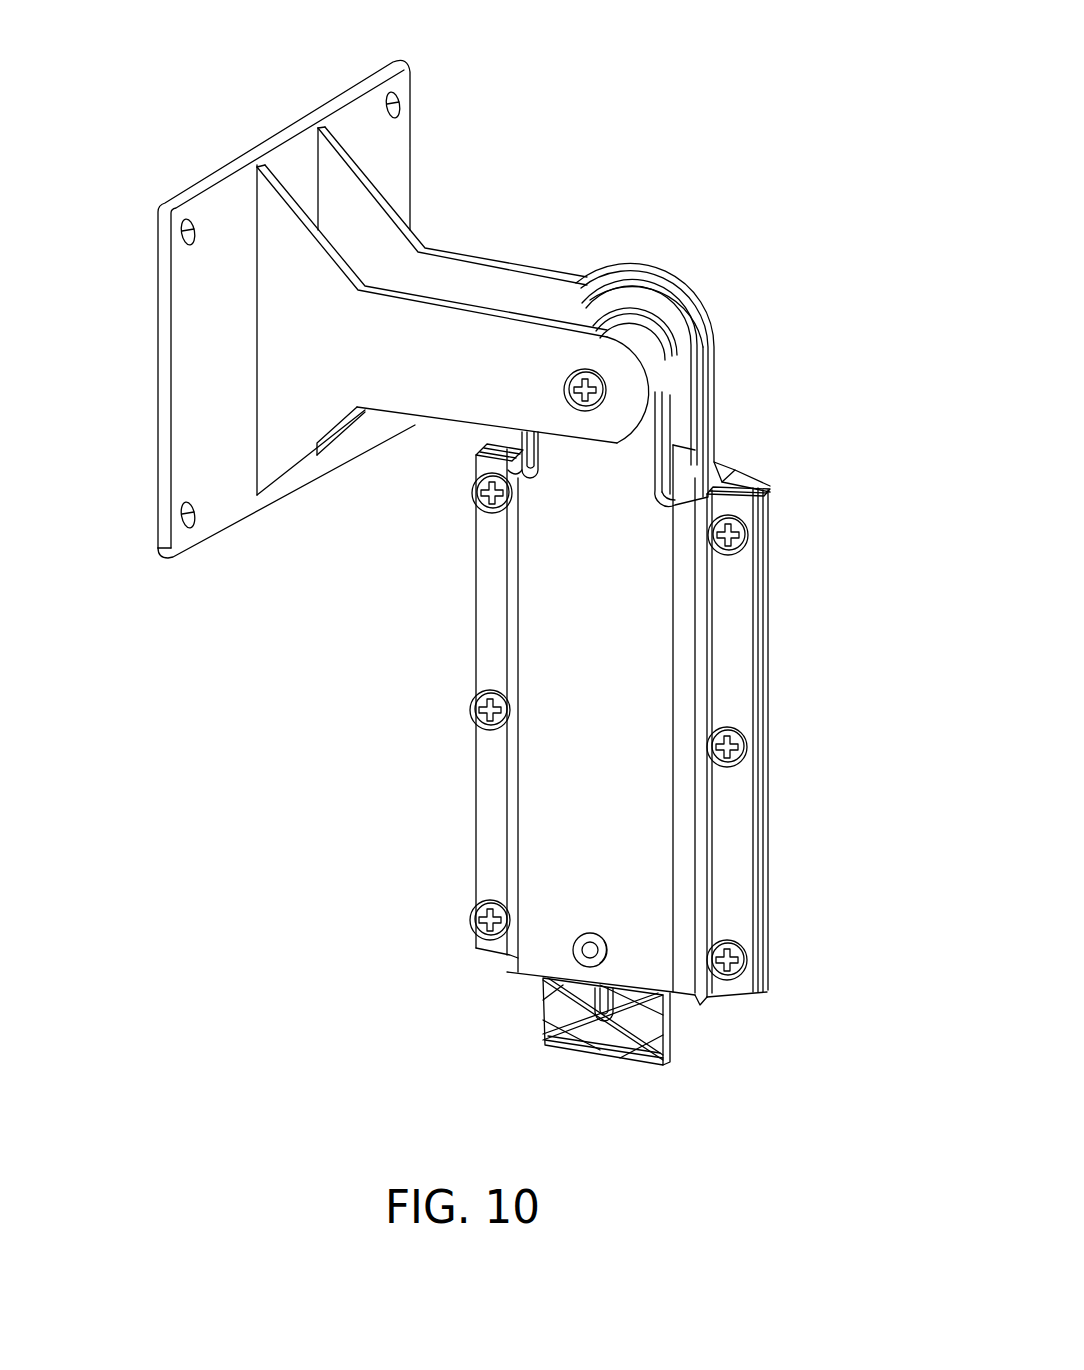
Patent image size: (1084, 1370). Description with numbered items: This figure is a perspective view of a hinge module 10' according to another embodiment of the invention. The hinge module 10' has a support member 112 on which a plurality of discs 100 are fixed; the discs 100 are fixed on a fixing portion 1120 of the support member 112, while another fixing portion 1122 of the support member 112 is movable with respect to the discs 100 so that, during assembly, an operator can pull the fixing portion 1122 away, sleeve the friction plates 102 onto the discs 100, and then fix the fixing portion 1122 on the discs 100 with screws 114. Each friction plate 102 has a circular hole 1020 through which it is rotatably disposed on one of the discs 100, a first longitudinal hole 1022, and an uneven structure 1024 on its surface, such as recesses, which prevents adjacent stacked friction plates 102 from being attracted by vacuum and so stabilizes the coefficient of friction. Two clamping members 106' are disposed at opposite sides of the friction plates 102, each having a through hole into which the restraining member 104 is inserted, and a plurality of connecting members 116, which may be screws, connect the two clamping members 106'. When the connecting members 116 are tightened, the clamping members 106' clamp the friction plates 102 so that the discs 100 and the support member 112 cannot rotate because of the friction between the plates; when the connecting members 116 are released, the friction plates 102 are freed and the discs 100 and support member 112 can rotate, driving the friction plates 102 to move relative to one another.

The hinge module 10' is at (758, 42).
The support member 112 is at (208, 170).
The fixing portion 1120 is at (497, 258).
The fixing portion 1122 is at (423, 417).
The screw 114 is at (570, 378).
The disc 100 is at (652, 318).
The circular hole 1020 is at (684, 328).
The friction plate 102 is at (705, 418).
The clamping member 106' is at (628, 724).
The connecting member 116 is at (475, 709).
The restraining member 104 is at (577, 947).
The first longitudinal hole 1022 is at (603, 1027).
The uneven structure 1024 is at (630, 1007).